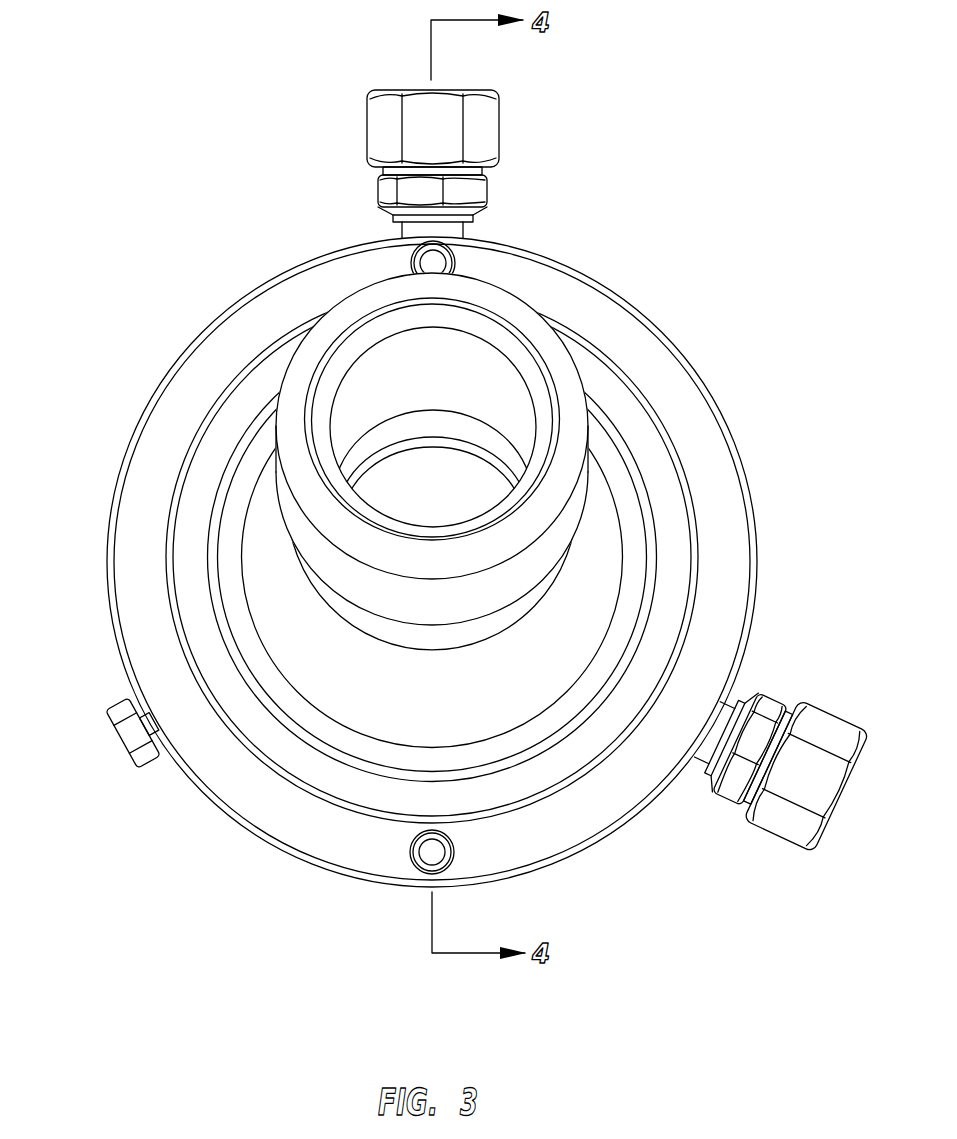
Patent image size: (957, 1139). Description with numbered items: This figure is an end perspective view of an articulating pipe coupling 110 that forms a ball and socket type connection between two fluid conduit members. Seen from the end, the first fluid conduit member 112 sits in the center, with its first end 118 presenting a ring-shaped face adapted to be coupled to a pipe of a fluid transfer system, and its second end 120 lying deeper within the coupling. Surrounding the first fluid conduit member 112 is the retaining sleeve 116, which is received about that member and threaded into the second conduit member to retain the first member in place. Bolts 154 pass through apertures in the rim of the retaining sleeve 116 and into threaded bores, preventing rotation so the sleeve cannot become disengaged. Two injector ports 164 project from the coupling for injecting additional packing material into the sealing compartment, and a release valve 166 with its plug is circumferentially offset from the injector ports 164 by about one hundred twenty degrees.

The pipe coupling 110 is at (140, 257).
The first fluid conduit member 112 is at (277, 563).
The retaining sleeve 116 is at (620, 830).
The first end 118 is at (573, 391).
The second end 120 is at (373, 715).
The bolts 154 is at (455, 264).
The injector port 164 is at (523, 152).
The release valve 166 is at (123, 745).